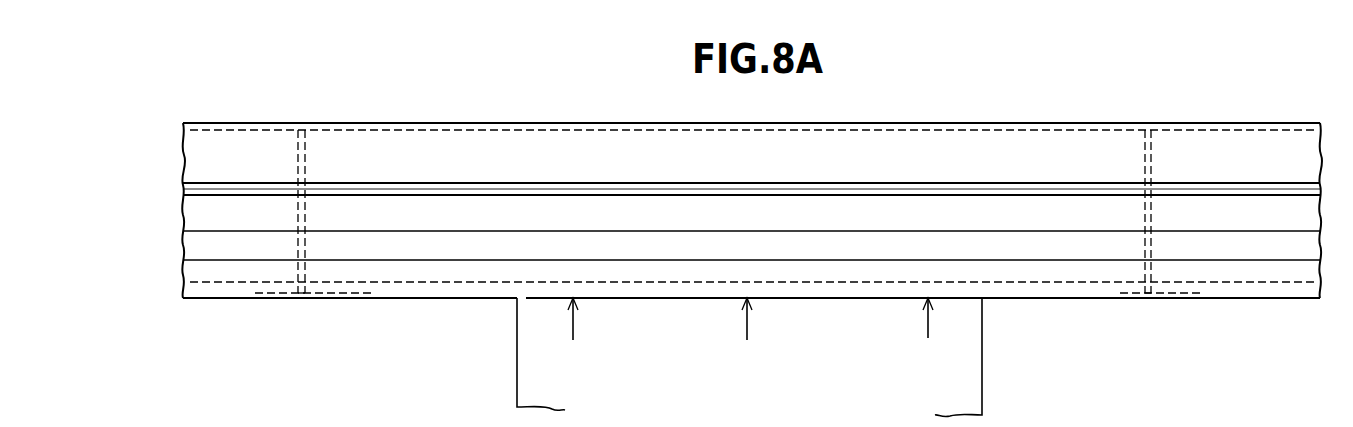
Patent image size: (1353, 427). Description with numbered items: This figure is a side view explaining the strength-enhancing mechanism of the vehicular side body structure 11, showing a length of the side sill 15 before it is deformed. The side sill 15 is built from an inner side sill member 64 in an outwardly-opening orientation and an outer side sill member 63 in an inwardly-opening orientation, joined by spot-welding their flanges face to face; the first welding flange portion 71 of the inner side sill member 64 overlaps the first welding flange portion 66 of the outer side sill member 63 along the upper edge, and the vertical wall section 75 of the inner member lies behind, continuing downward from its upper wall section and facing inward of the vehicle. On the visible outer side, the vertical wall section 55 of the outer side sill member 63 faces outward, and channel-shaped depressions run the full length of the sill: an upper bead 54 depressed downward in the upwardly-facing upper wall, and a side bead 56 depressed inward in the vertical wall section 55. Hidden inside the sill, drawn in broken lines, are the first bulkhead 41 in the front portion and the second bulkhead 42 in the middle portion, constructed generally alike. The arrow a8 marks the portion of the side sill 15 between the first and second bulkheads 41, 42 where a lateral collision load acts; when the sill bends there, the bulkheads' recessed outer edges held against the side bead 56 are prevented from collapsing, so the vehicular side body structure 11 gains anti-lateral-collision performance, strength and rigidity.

The vehicular side body structure 11 is at (206, 323).
The side sill 15 is at (257, 300).
The first bulkhead 41 is at (314, 244).
The second bulkhead 42 is at (1159, 246).
The upper bead 54 is at (674, 242).
The vertical wall section 55 is at (460, 299).
The side bead 56 is at (488, 282).
The outer side sill member 63 is at (421, 300).
The inner side sill member 64 is at (424, 120).
The first welding flange portion 66 is at (573, 197).
The first welding flange portion 71 is at (575, 183).
The vertical wall section 75 is at (528, 128).
The arrow a8 is at (750, 331).